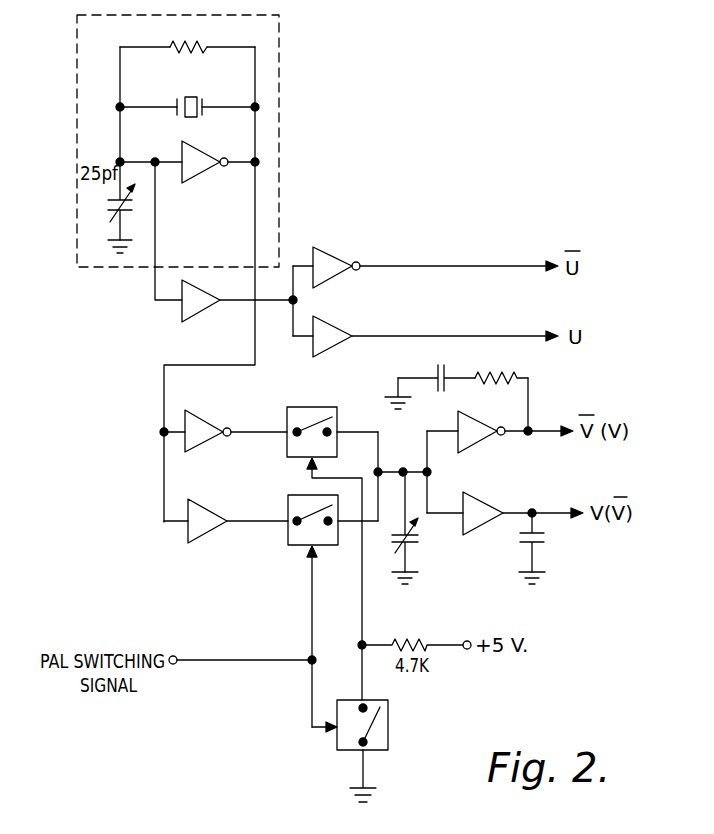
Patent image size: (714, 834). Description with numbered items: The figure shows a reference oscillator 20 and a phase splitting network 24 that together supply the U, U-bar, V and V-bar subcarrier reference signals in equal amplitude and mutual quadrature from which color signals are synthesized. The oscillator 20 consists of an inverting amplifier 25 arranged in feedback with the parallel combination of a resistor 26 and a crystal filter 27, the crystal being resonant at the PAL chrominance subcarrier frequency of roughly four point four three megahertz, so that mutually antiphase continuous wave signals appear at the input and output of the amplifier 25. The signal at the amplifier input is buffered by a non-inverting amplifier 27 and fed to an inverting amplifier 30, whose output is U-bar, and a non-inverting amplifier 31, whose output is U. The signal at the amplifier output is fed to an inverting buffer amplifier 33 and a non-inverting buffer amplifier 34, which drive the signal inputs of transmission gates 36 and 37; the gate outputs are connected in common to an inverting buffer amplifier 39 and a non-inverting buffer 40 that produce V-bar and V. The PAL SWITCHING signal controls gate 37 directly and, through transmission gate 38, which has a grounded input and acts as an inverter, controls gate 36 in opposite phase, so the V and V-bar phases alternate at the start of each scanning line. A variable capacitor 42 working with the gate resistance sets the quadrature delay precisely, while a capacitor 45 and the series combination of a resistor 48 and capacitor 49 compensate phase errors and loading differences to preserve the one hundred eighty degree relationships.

The oscillator 20 is at (283, 86).
The phase splitting network 24 is at (420, 228).
The inverting amplifier 25 is at (199, 179).
The resistor 26 is at (190, 44).
The crystal filter 27 is at (195, 117).
The inverting amplifier 30 is at (325, 248).
The non-inverting amplifier 31 is at (336, 319).
The inverting buffer amplifier 33 is at (203, 418).
The non-inverting buffer amplifier 34 is at (209, 506).
The transmission gate 36 is at (303, 407).
The transmission gate 37 is at (292, 548).
The transmission gate 38 is at (388, 731).
The inverting buffer amplifier 39 is at (476, 449).
The non-inverting buffer 40 is at (487, 499).
The variable capacitor 42 is at (392, 541).
The capacitor 45 is at (519, 541).
The resistor 48 is at (500, 384).
The capacitor 49 is at (437, 366).